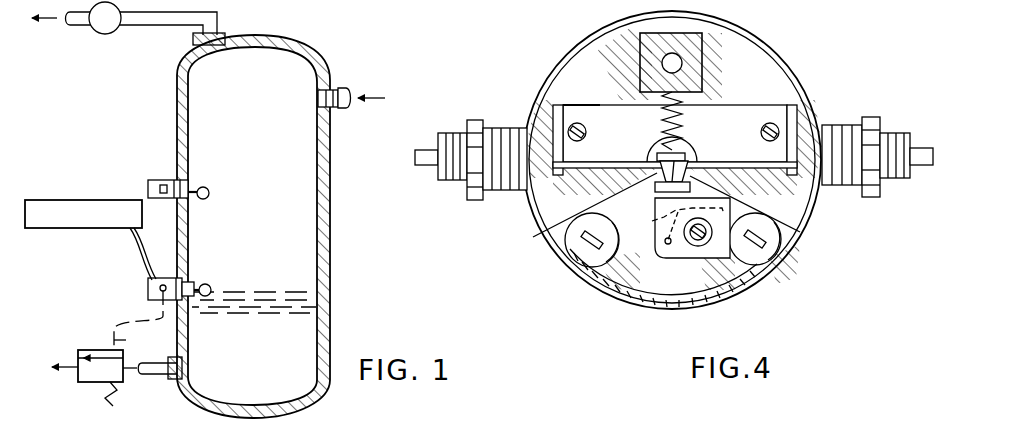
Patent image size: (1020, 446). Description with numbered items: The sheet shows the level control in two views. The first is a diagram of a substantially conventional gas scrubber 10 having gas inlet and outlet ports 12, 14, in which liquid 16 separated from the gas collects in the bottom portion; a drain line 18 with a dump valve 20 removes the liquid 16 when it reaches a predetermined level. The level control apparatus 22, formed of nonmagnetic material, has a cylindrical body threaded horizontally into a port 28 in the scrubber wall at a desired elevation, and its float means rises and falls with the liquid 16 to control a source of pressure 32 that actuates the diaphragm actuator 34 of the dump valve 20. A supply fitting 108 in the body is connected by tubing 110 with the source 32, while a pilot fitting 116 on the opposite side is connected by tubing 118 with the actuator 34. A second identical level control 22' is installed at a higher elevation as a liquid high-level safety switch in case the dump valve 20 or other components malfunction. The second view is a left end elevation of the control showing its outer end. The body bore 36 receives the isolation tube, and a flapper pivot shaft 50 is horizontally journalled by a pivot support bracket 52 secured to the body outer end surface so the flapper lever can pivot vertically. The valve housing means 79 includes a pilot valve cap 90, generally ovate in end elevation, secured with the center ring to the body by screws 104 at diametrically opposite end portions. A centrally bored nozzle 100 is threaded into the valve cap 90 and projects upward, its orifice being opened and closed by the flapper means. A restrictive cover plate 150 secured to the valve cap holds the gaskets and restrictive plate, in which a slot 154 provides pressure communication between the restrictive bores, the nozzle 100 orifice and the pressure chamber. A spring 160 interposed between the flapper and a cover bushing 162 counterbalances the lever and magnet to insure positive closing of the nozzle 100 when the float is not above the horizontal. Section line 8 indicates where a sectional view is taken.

In FIG. 1, the gas scrubber 10 is at (152, 96).
In FIG. 1, the gas inlet port 12 is at (333, 89).
In FIG. 1, the gas outlet port 14 is at (217, 32).
In FIG. 1, the liquid 16 is at (247, 291).
In FIG. 1, the drain line 18 is at (157, 376).
In FIG. 1, the dump valve 20 is at (82, 346).
In FIG. 1, the level control apparatus 22 is at (144, 282).
In FIG. 4, the level control apparatus 22 is at (663, 160).
In FIG. 1, the second level control 22' is at (165, 176).
In FIG. 1, the port 28 is at (190, 283).
In FIG. 1, the source of pressure 32 is at (99, 200).
In FIG. 1, the diaphragm actuator 34 is at (127, 341).
In FIG. 1, the tubing 110 is at (135, 244).
In FIG. 1, the tubing 118 is at (158, 303).
In FIG. 4, the bore 36 is at (640, 180).
In FIG. 4, the flapper pivot shaft 50 is at (645, 140).
In FIG. 4, the pivot support bracket 52 is at (570, 103).
In FIG. 4, the valve housing means 79 is at (560, 228).
In FIG. 4, the pilot valve cap 90 is at (628, 278).
In FIG. 4, the nozzle 100 is at (698, 158).
In FIG. 4, the screws 104 is at (580, 254).
In FIG. 4, the supply fitting 108 is at (888, 86).
In FIG. 4, the pilot fitting 116 is at (470, 200).
In FIG. 4, the restrictive cover plate 150 is at (648, 250).
In FIG. 4, the slot 154 is at (656, 218).
In FIG. 4, the spring 160 is at (661, 114).
In FIG. 4, the cover bushing 162 is at (703, 35).
In FIG. 4, the section line 8- 8 is at (718, 130).